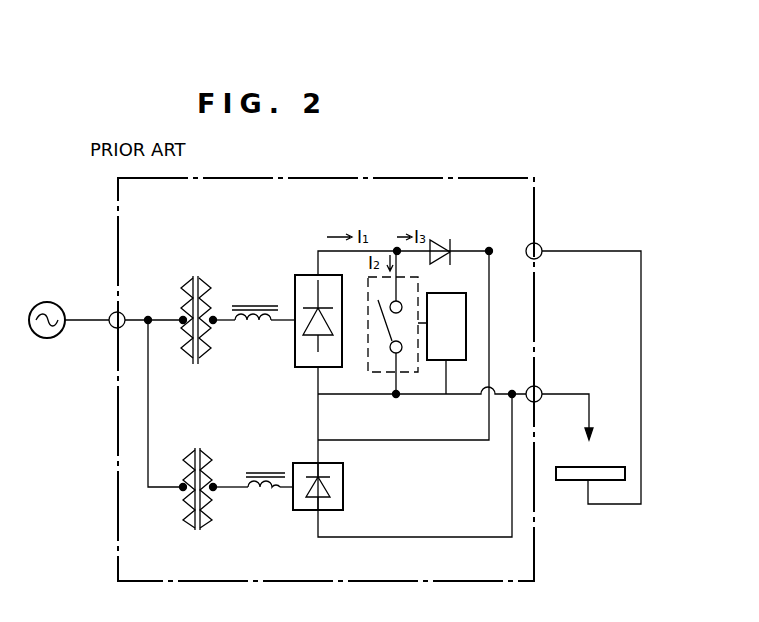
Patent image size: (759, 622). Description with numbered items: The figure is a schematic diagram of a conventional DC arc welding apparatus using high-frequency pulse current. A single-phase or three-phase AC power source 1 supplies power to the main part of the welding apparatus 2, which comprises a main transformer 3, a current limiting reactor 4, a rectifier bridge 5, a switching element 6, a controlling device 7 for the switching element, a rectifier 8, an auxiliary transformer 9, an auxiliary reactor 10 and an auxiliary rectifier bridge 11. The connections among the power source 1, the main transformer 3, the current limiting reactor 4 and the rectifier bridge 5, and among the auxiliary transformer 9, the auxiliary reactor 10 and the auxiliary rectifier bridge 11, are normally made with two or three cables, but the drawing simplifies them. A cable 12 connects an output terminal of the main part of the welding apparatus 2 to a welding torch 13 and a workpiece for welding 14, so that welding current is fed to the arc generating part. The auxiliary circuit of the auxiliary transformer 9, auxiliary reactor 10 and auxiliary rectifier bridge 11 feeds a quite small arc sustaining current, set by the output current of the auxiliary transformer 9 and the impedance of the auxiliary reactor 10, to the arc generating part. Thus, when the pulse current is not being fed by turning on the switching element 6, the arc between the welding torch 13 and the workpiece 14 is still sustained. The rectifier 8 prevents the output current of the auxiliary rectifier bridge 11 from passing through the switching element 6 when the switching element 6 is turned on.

The AC power source 1 is at (37, 343).
The main part of the welding apparatus 2 is at (470, 178).
The main transformer 3 is at (194, 278).
The current limiting reactor 4 is at (251, 302).
The rectifier bridge 5 is at (296, 275).
The switching element 6 is at (367, 377).
The controlling device 7 is at (447, 378).
The rectifier 8 is at (452, 240).
The auxiliary transformer 9 is at (202, 452).
The auxiliary reactor 10 is at (257, 472).
The auxiliary rectifier bridge 11 is at (343, 488).
The cable 12 is at (582, 252).
The welding torch 13 is at (594, 437).
The workpiece for welding 14 is at (565, 482).